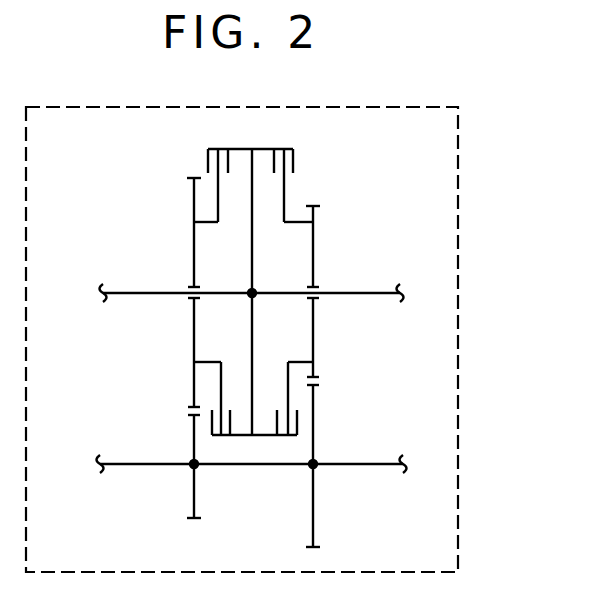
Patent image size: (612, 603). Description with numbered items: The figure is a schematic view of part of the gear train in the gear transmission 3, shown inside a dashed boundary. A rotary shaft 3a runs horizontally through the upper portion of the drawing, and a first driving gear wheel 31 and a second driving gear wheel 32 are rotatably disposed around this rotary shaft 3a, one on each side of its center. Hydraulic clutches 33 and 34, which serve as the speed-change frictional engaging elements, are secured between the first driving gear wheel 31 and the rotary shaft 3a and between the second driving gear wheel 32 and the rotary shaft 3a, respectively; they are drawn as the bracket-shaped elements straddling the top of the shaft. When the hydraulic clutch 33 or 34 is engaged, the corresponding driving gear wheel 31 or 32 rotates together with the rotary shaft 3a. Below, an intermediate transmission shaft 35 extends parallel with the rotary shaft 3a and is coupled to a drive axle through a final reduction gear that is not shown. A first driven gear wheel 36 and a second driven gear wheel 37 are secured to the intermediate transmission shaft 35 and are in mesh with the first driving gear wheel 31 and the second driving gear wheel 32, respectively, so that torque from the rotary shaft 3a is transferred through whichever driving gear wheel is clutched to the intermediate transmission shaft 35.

The gear transmission 3 is at (457, 172).
The rotary shaft 3a is at (145, 295).
The first driving gear wheel 31 is at (313, 232).
The second driving gear wheel 32 is at (193, 215).
The hydraulic clutch 33 is at (285, 148).
The hydraulic clutch 34 is at (218, 148).
The intermediate transmission shaft 35 is at (133, 466).
The first driven gear wheel 36 is at (314, 500).
The second driven gear wheel 37 is at (196, 494).